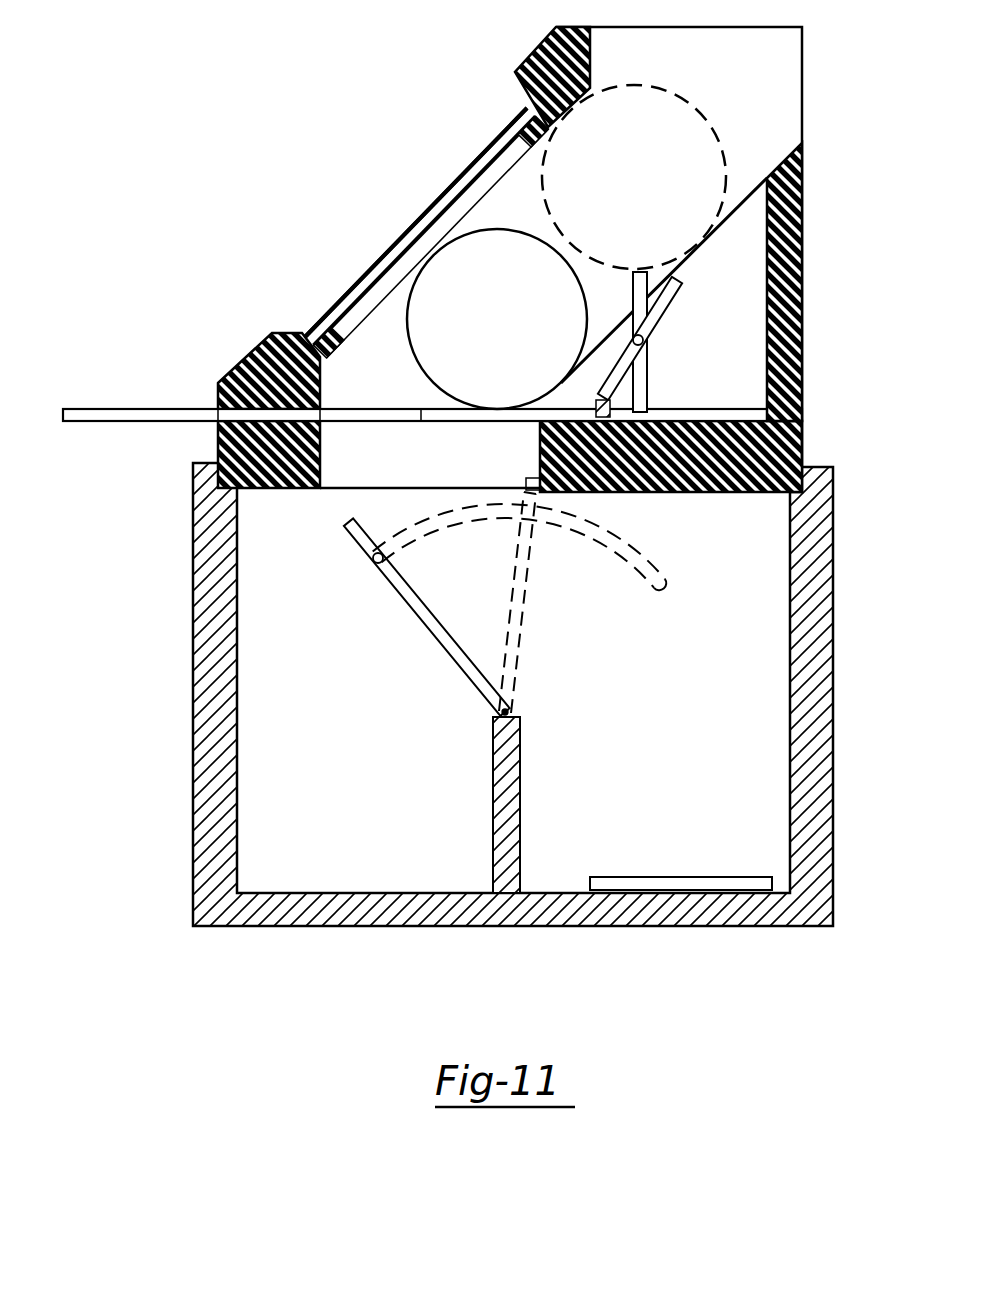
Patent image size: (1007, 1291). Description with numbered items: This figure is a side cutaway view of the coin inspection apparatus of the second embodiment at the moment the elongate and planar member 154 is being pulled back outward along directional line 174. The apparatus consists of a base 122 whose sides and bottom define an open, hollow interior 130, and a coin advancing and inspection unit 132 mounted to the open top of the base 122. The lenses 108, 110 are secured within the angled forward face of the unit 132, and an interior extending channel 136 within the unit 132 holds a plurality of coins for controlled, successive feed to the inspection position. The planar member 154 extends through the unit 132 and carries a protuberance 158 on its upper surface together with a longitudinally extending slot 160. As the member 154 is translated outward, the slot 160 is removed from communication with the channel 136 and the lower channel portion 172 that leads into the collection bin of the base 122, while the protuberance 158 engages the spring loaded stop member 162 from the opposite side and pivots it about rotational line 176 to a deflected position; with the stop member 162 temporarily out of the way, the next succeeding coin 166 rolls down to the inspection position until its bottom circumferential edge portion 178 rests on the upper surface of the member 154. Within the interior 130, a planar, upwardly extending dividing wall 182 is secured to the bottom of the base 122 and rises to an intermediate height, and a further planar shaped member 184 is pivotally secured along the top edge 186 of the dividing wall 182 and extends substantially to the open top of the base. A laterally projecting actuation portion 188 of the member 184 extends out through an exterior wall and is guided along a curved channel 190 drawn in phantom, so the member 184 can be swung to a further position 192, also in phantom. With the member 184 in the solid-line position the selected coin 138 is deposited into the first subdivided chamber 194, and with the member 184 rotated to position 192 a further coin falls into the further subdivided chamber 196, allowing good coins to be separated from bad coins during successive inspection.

The lens 108 is at (377, 257).
The lens 110 is at (416, 222).
The base 122 is at (166, 683).
The interior 130 is at (734, 632).
The coin advancing and inspection unit 132 is at (453, 82).
The channel 136 is at (401, 380).
The coin 138 is at (677, 876).
The elongate and planar member 154 is at (104, 408).
The protuberance 158 is at (683, 492).
The longitudinally extending slot 160 is at (383, 421).
The stop member 162 is at (690, 292).
The coin 166 is at (490, 232).
The lower channel portion 172 is at (496, 463).
The directional line 174 is at (158, 430).
The rotational line 176 is at (680, 291).
The bottom circumferential edge portion 178 is at (495, 410).
The dividing wall 182 is at (492, 815).
The planar shaped member 184 is at (440, 648).
The top edge 186 is at (510, 712).
The actuation portion 188 is at (372, 559).
The curved channel 190 is at (457, 517).
The further position 192 is at (528, 570).
The first subdivided chamber 194 is at (704, 757).
The further subdivided chamber 196 is at (356, 808).